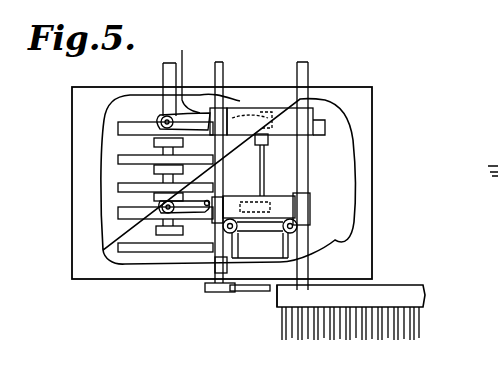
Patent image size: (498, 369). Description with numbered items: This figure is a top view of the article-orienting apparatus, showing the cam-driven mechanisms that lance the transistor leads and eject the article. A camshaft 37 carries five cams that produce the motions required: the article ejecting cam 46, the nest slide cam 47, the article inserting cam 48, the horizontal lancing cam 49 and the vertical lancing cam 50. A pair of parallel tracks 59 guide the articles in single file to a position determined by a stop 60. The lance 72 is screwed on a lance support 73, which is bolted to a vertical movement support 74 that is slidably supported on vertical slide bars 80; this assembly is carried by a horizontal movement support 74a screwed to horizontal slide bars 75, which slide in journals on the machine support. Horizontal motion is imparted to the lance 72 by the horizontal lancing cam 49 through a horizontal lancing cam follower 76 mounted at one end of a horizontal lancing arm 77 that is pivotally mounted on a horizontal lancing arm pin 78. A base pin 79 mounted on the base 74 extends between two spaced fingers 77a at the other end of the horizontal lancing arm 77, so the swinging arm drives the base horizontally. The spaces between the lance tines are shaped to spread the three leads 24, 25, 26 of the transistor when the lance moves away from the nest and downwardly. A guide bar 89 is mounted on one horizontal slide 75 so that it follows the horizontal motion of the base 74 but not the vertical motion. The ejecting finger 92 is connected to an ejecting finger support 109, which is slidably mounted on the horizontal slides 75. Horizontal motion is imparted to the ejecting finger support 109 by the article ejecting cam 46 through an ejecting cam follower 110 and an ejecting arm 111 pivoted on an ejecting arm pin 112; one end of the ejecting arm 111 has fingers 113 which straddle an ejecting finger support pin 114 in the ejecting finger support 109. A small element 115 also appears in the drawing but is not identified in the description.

The lead 24 is at (420, 328).
The lead 25 is at (418, 330).
The lead 26 is at (412, 333).
The camshaft 37 is at (163, 70).
The article ejecting cam 46 is at (118, 128).
The nest slide cam 47 is at (118, 158).
The article inserting cam 48 is at (118, 186).
The horizontal lancing cam 49 is at (118, 212).
The vertical lancing cam 50 is at (120, 258).
The parallel tracks 59 is at (406, 285).
The stop 60 is at (275, 305).
The lance 72 is at (256, 291).
The lance support 73 is at (345, 264).
The vertical movement support 74 is at (280, 269).
The horizontal movement support 74a is at (313, 197).
The horizontal slide bars 75 is at (191, 94).
The horizontal lancing cam follower 76 is at (210, 201).
The horizontal lancing arm 77 is at (188, 207).
The spaced fingers 77a is at (257, 195).
The horizontal lancing arm pin 78 is at (212, 203).
The base pin 79 is at (266, 188).
The vertical slide bars 80 is at (238, 227).
The guide bar 89 is at (228, 292).
The ejecting finger 92 is at (267, 143).
The ejecting finger support 109 is at (228, 179).
The ejecting cam follower 110 is at (162, 117).
The ejecting arm 111 is at (228, 106).
The ejecting arm pin 112 is at (186, 72).
The fingers 113 is at (255, 104).
The ejecting finger support pin 114 is at (274, 103).
The contact 115 is at (279, 122).